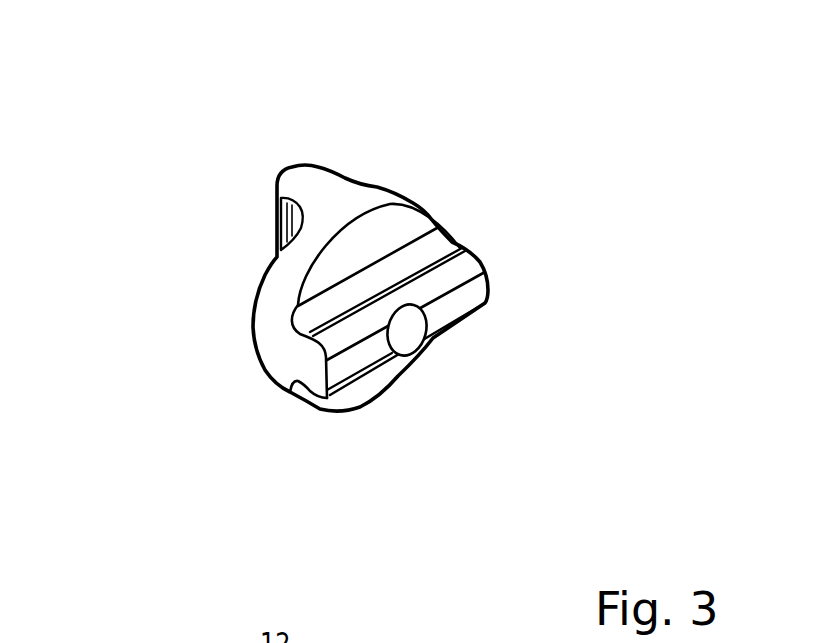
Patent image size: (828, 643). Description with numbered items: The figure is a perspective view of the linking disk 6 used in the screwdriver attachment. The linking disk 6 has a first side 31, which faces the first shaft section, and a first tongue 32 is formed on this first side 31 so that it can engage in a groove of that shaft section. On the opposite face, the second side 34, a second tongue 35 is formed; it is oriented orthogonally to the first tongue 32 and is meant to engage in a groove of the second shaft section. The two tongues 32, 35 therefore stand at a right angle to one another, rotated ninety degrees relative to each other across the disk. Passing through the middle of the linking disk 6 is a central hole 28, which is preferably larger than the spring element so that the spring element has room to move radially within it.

The linking disk 6 is at (333, 275).
The central hole 28 is at (420, 352).
The first side 31 is at (408, 239).
The first tongue 32 is at (462, 300).
The second side 34 is at (247, 290).
The second tongue 35 is at (273, 213).